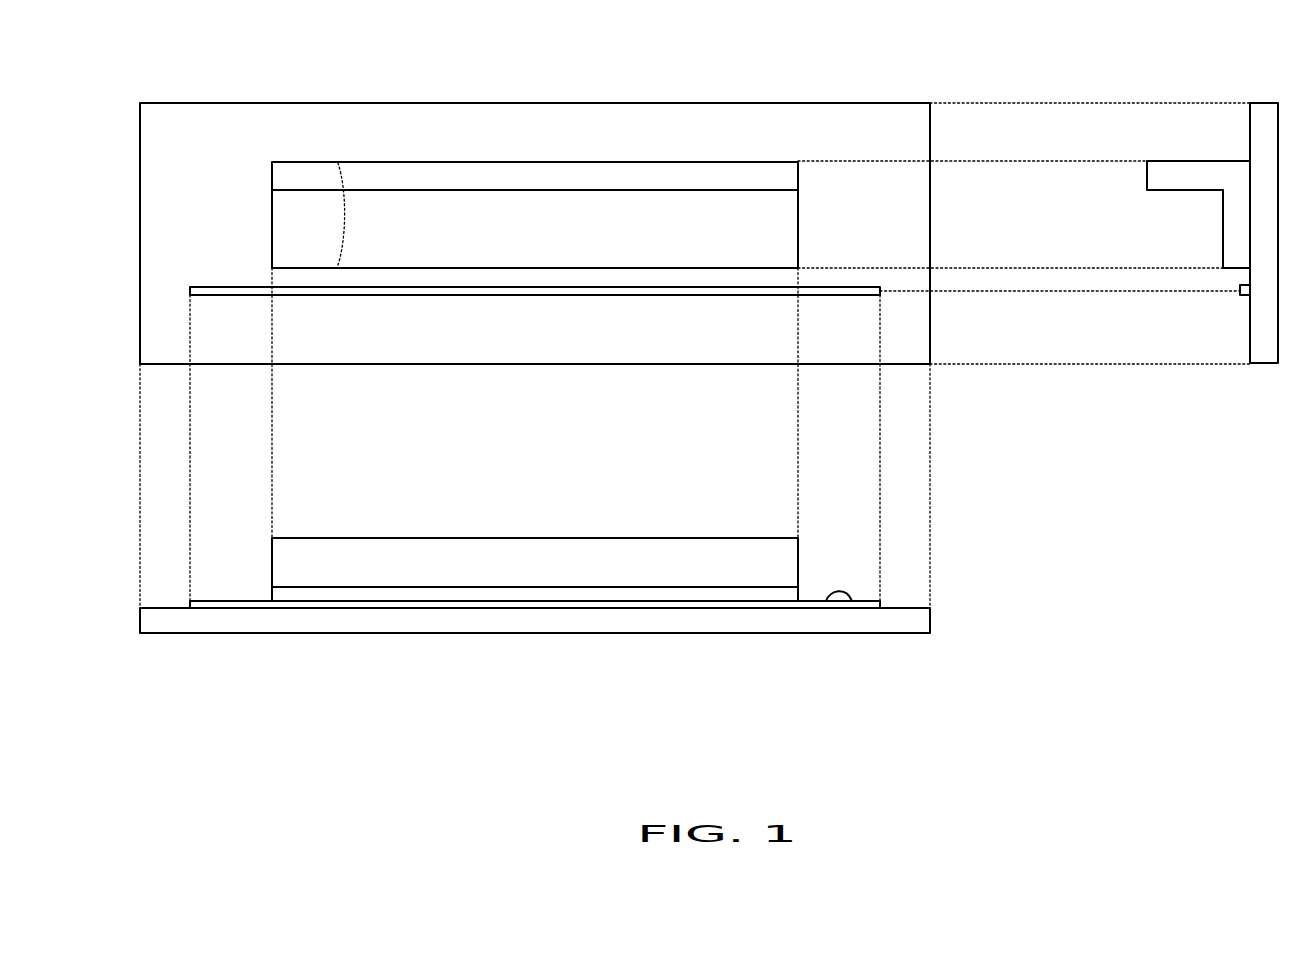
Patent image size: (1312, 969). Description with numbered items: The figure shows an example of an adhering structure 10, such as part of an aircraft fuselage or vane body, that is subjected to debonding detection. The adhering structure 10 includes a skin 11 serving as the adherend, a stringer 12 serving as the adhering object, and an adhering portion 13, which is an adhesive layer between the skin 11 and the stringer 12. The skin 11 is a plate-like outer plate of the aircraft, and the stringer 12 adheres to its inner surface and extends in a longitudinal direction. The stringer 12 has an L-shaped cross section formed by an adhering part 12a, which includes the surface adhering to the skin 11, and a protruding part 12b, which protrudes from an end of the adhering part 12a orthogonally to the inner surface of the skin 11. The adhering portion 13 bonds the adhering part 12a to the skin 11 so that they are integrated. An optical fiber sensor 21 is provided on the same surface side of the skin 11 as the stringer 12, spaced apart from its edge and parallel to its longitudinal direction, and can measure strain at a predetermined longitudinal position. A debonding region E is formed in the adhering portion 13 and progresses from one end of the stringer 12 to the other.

The adhering structure 10 is at (546, 100).
The skin 11 is at (248, 103).
The stringer 12 is at (761, 373).
The adhering part 12a is at (672, 240).
The protruding part 12b is at (474, 180).
The adhering portion 13 is at (1243, 156).
The optical fiber sensor 21 is at (527, 297).
The debonding region E is at (323, 215).